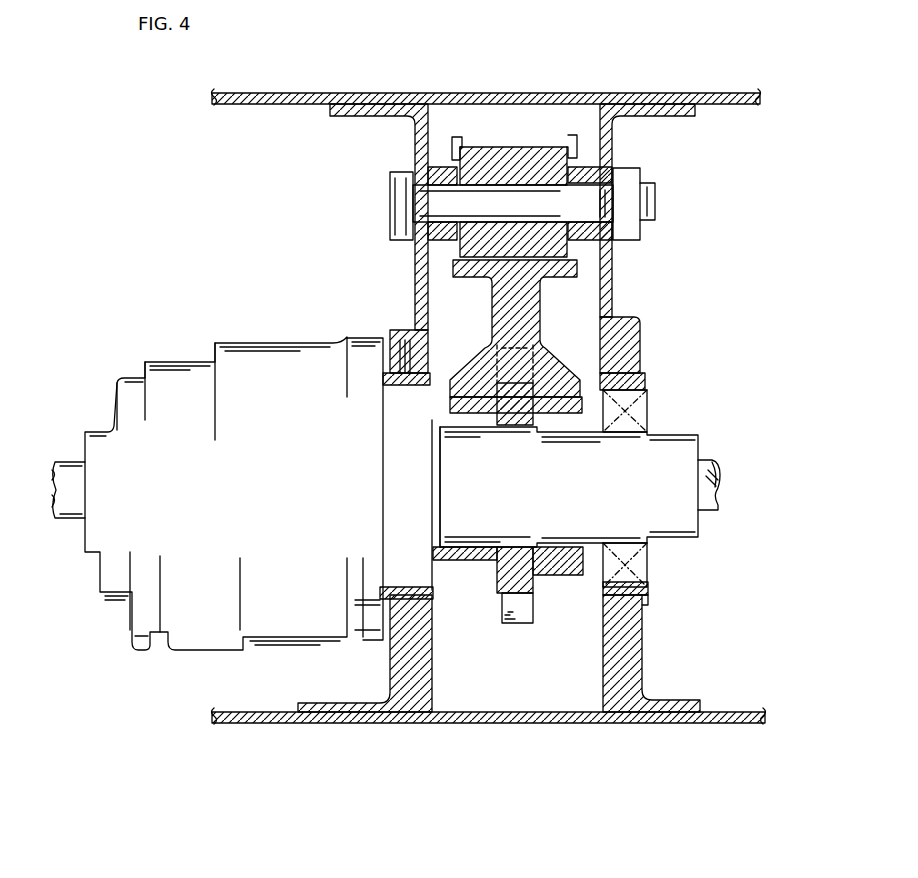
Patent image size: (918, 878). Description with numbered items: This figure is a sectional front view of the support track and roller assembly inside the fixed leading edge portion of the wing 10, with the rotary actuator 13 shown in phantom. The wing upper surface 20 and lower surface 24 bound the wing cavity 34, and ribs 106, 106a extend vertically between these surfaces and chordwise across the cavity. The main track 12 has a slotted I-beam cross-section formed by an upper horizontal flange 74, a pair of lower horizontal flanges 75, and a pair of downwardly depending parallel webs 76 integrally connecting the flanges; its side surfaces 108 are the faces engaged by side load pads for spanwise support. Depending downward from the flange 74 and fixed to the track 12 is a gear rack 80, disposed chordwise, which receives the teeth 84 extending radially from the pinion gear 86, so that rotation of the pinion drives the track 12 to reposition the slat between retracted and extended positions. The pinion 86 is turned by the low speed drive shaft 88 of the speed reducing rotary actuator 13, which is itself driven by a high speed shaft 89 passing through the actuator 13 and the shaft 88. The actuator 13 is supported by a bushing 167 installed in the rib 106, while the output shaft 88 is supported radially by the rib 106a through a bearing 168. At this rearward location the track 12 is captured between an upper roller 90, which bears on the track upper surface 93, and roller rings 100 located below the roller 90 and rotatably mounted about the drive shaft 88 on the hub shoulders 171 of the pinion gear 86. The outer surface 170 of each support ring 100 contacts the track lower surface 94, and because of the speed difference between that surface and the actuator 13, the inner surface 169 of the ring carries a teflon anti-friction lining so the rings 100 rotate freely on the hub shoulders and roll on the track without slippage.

The wing 10 is at (256, 90).
The upper surface 20 is at (336, 92).
The wing cavity 34 is at (692, 116).
The lower surface 24 is at (590, 723).
The rib 106 is at (417, 139).
The rib 106a is at (638, 633).
The upper roller 90 is at (501, 150).
The upper surface 93 is at (445, 247).
The side surfaces 108 is at (462, 264).
The track 12 is at (560, 281).
The upper horizontal flange 74 is at (568, 258).
The webs 76 is at (483, 322).
The gear rack 80 is at (560, 320).
The lower surface 94 is at (577, 407).
The lower horizontal flanges 75 is at (385, 400).
The bushing 167 is at (405, 340).
The low speed drive shaft 88 is at (680, 519).
The high speed shaft 89 is at (68, 465).
The bearing 168 is at (640, 567).
The roller rings 100 is at (470, 560).
The hub shoulders 171 is at (491, 560).
The outer surface 170 is at (533, 583).
The teeth 84 is at (505, 614).
The pinion gear 86 is at (525, 582).
The rotary actuator 13 is at (211, 510).
The inner surface 169 is at (390, 530).